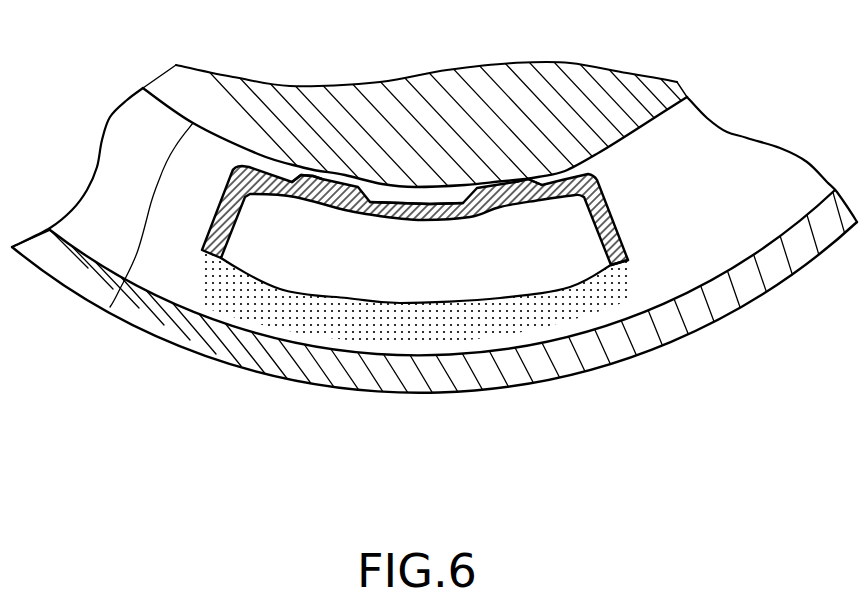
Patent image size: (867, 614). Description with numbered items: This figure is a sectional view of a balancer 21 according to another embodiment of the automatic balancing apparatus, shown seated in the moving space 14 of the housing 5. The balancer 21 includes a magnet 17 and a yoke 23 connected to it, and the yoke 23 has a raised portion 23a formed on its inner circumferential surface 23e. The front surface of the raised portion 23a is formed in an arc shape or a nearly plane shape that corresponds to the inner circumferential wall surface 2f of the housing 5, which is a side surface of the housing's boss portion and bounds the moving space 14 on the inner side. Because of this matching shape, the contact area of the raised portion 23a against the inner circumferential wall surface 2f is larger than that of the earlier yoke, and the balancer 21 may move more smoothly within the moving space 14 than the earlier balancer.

The housing 5 is at (327, 389).
The moving space 14 is at (115, 185).
The inner circumferential wall surface 2f is at (110, 307).
The magnet 17 is at (457, 283).
The balancer 21 is at (637, 259).
The yoke 23 is at (603, 197).
The raised portion 23a is at (335, 177).
The inner circumferential surface 23e is at (408, 202).